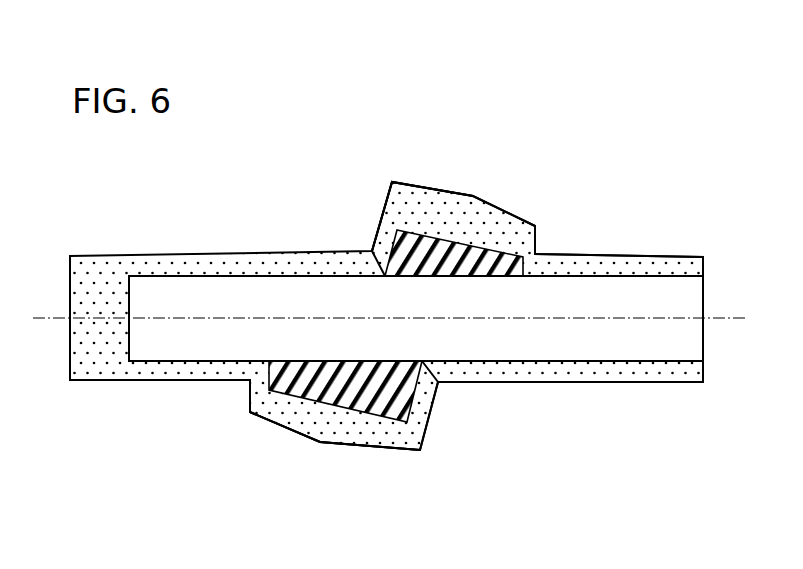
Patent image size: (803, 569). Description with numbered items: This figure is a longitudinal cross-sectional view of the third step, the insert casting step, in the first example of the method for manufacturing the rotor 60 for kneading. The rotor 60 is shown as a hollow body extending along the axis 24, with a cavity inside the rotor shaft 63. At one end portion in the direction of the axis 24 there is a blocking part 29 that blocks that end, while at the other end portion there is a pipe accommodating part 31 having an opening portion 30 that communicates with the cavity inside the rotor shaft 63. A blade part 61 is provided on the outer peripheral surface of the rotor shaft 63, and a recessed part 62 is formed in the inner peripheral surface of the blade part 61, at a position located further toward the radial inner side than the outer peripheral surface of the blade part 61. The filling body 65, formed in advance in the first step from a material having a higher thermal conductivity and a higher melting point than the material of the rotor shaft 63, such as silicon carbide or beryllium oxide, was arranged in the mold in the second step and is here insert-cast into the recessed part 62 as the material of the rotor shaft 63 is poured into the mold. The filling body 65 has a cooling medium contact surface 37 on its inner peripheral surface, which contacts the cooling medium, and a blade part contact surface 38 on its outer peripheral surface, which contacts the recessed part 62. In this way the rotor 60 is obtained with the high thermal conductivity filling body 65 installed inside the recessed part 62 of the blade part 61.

The axis 24 is at (48, 316).
The blocking part 29 is at (131, 327).
The opening portion 30 is at (697, 373).
The pipe accommodating part 31 is at (668, 361).
The cooling medium contact surface 37 is at (413, 277).
The blade part contact surface 38 is at (486, 246).
The rotor for kneading 60 is at (627, 252).
The blade part 61 is at (510, 210).
The recessed part 62 is at (463, 242).
The rotor shaft 63 is at (685, 256).
The filling body 65 is at (413, 233).